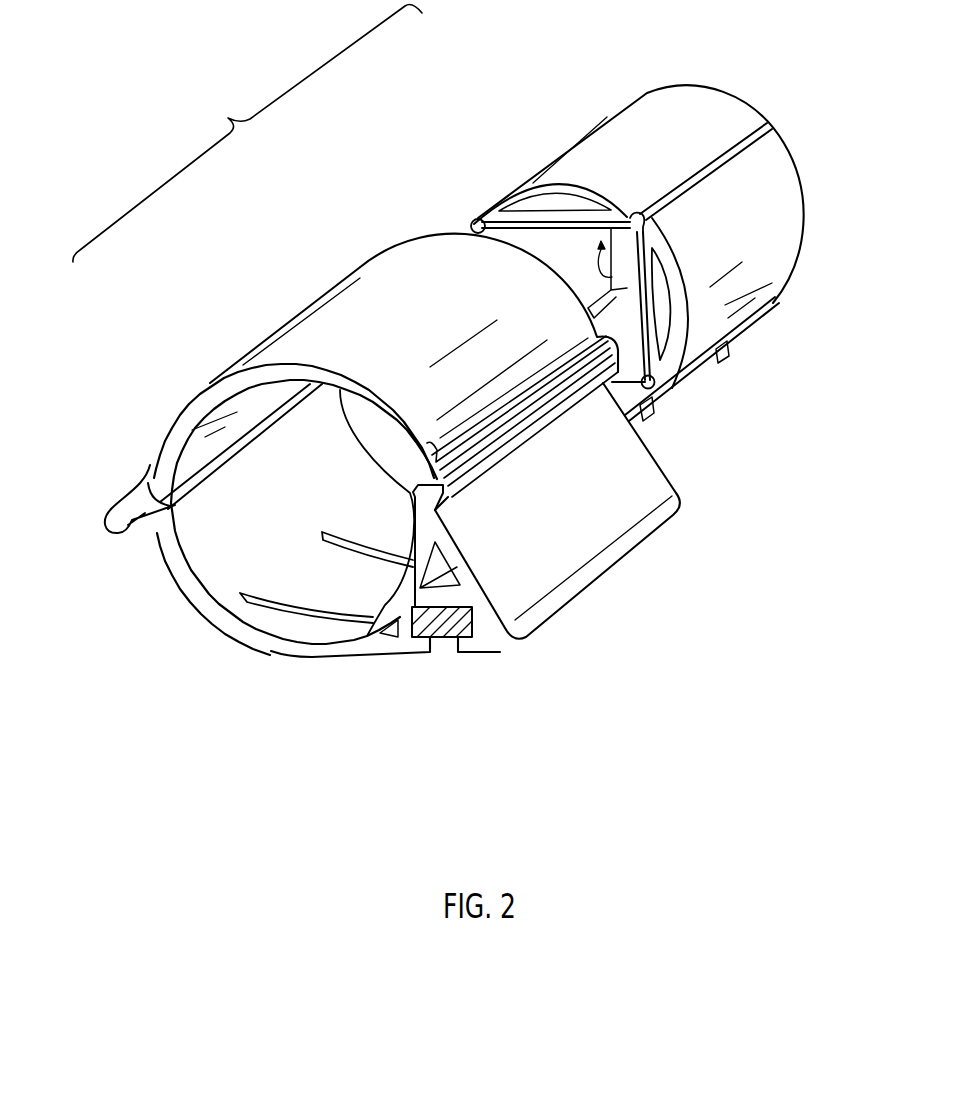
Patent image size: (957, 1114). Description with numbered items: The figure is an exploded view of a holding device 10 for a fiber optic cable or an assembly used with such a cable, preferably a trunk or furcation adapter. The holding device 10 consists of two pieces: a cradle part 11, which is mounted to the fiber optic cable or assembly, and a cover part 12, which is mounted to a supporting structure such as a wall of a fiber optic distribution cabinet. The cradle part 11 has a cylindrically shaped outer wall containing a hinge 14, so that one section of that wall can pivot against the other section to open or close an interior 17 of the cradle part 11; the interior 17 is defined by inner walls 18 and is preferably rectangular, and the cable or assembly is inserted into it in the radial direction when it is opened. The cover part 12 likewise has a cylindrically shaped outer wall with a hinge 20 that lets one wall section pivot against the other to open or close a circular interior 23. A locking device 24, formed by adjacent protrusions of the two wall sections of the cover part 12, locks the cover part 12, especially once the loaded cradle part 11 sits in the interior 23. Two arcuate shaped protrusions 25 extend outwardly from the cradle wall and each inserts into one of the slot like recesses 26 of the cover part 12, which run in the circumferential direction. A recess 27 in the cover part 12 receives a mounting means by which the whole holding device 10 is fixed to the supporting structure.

The holding device 10 is at (247, 133).
The cradle part 11 is at (538, 163).
The cover part 12 is at (290, 322).
The hinge 14 is at (468, 214).
The interior 17 is at (614, 290).
The inner walls 18 is at (557, 222).
The hinge 20 is at (493, 470).
The interior 23 is at (236, 541).
The locking device 24 is at (127, 527).
The arcuate shaped protrusion 25 is at (722, 358).
The slot like recesses 26 is at (250, 603).
The recess 27 is at (430, 622).